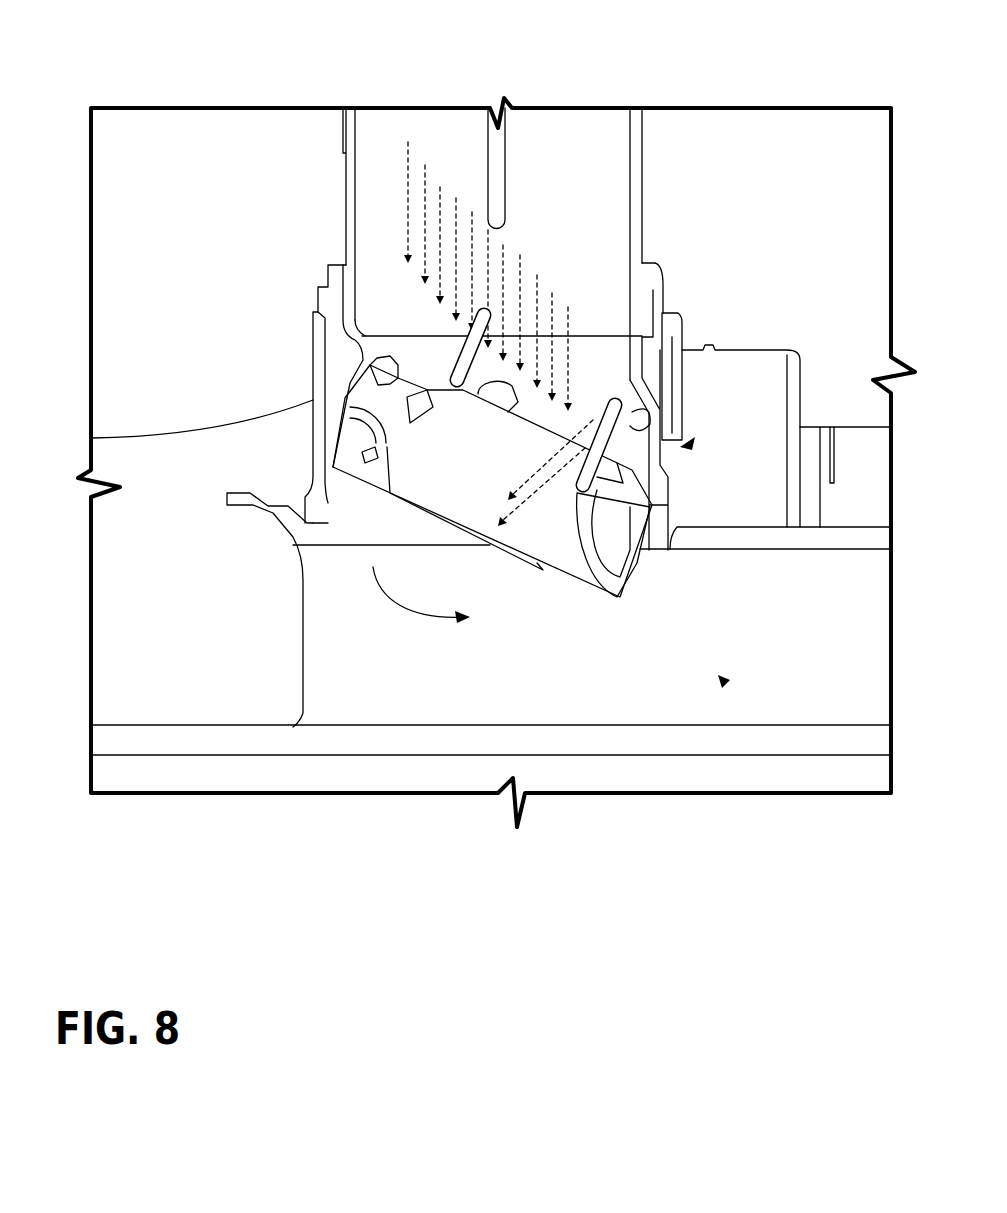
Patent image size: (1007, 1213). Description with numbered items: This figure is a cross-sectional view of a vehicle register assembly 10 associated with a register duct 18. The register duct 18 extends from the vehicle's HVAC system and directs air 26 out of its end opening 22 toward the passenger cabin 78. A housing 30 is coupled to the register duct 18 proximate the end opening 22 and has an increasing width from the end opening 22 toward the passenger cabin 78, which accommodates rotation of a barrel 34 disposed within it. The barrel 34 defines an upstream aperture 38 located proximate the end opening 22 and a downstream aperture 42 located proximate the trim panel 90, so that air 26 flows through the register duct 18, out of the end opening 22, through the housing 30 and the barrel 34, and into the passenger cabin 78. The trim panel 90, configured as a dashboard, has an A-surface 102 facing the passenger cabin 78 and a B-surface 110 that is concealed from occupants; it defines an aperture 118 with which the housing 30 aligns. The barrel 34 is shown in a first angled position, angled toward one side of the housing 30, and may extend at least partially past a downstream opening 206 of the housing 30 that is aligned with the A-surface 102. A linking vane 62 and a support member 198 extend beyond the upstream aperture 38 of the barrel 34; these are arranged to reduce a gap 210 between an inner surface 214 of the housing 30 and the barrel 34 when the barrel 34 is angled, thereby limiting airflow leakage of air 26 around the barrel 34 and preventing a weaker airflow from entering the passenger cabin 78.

The register assembly 10 is at (680, 447).
The register duct 18 is at (580, 165).
The end opening 22 is at (313, 362).
The air 26 is at (405, 190).
The housing 30 is at (660, 483).
The barrel 34 is at (594, 588).
The upstream aperture 38 is at (558, 400).
The downstream aperture 42 is at (408, 494).
The linking vane 62 is at (590, 540).
The passenger cabin 78 is at (718, 675).
The trim panel 90 is at (810, 540).
The A-surface 102 is at (757, 550).
The B-surface 110 is at (847, 523).
The aperture 118 is at (677, 527).
The support member 198 is at (463, 337).
The downstream opening 206 is at (432, 548).
The gap 210 is at (630, 400).
The inner surface 214 is at (632, 425).